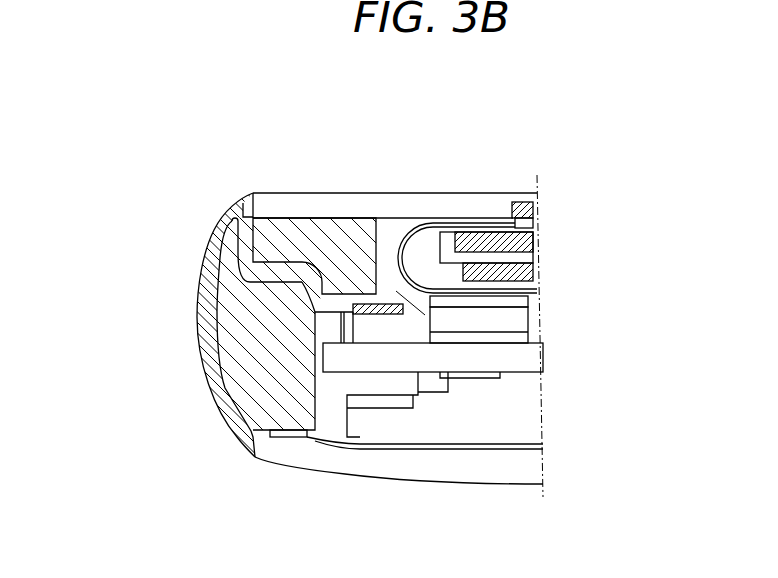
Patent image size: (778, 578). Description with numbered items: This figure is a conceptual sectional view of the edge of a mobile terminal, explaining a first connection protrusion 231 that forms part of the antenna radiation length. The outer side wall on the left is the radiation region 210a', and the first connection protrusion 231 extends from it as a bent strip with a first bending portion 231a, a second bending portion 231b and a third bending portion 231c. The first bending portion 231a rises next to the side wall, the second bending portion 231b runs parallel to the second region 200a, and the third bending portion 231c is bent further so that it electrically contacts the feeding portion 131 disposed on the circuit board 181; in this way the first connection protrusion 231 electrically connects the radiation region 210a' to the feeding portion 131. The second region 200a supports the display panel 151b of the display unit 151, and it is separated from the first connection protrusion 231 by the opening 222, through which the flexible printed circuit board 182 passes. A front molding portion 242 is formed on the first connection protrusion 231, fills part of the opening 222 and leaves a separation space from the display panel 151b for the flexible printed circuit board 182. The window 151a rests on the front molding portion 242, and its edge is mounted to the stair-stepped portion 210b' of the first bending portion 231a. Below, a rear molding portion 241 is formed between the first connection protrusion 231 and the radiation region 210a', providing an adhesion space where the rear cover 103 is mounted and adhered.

The rear cover 103 is at (482, 470).
The feeding portion 131 is at (388, 330).
The display unit 151 is at (458, 217).
The window 151a is at (470, 196).
The display panel 151b is at (525, 238).
The circuit board 181 is at (535, 356).
The flexible printed circuit board 182 is at (404, 221).
The second region 200a is at (523, 273).
The radiation region 210a' is at (262, 325).
The stair-stepped portion 210b' is at (256, 166).
The opening 222 is at (525, 320).
The first connection protrusion 231 is at (195, 282).
The first bending portion 231a is at (243, 242).
The second bending portion 231b is at (277, 272).
The third bending portion 231c is at (313, 312).
The rear molding portion 241 is at (265, 396).
The front molding portion 242 is at (305, 240).